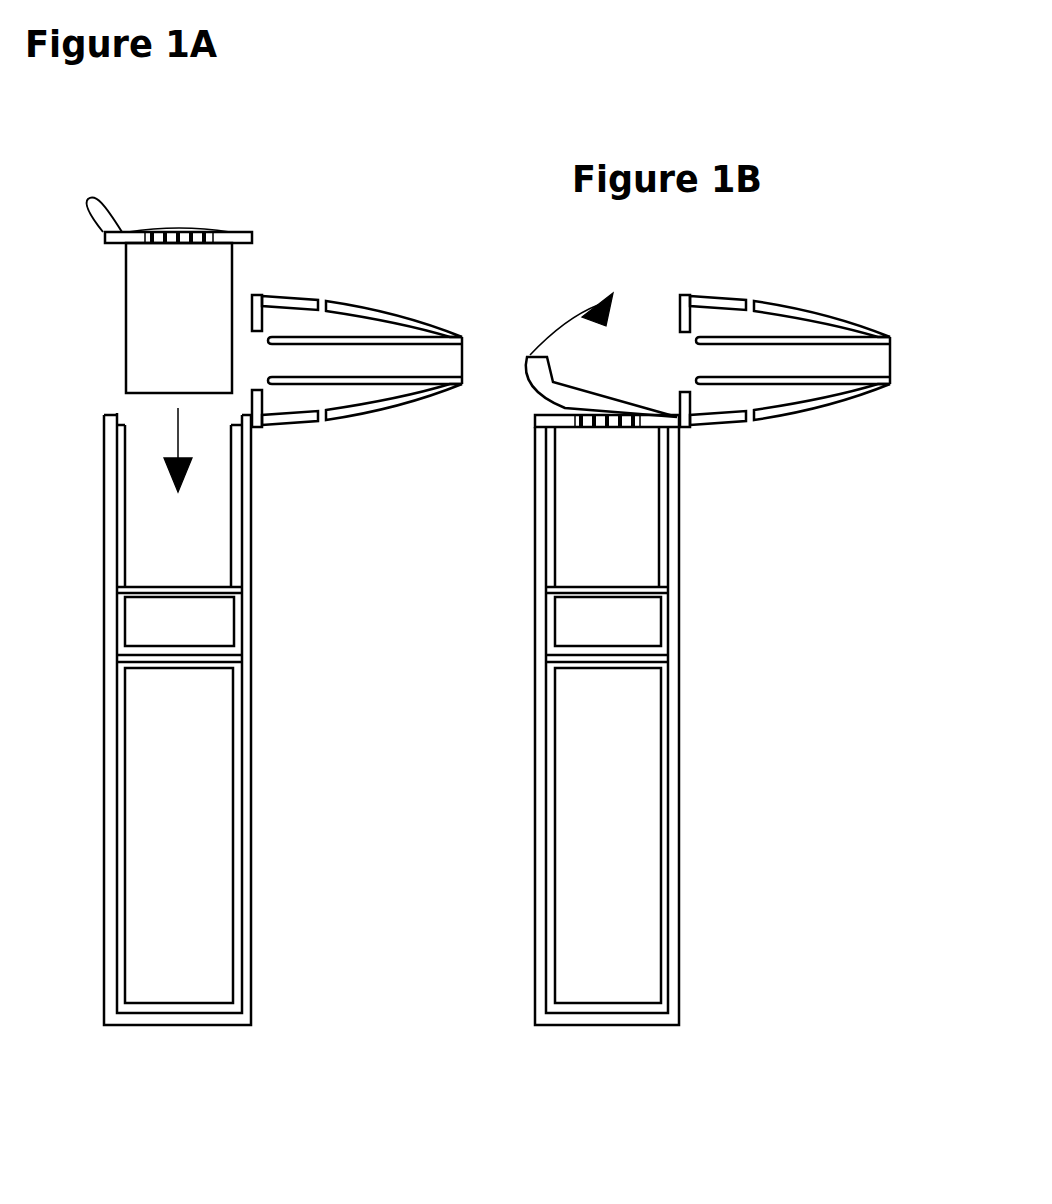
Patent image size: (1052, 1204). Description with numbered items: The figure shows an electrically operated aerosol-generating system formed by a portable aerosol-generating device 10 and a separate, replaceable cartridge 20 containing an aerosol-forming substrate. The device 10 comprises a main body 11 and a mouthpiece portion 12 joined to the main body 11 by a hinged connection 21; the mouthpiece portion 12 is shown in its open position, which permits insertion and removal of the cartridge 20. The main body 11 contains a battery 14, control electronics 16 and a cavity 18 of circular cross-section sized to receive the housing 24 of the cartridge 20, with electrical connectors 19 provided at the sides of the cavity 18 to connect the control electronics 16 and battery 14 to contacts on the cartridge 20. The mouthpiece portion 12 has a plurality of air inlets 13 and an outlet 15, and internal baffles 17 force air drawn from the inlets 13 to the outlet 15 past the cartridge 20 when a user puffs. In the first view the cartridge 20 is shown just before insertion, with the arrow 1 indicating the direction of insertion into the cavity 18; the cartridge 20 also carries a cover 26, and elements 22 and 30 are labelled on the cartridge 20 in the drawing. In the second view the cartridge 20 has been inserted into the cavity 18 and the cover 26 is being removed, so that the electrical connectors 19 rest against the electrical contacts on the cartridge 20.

In FIG. 1A, the arrow 1 is at (175, 440).
In FIG. 1A, the aerosol-generating device 10 is at (98, 765).
In FIG. 1B, the aerosol-generating device 10 is at (526, 771).
In FIG. 1A, the main body 11 is at (253, 558).
In FIG. 1A, the mouthpiece portion 12 is at (388, 300).
In FIG. 1B, the mouthpiece portion 12 is at (818, 300).
In FIG. 1A, the air inlets 13 is at (322, 293).
In FIG. 1B, the air inlets 13 is at (750, 293).
In FIG. 1A, the battery 14 is at (200, 860).
In FIG. 1B, the battery 14 is at (630, 860).
In FIG. 1A, the outlet 15 is at (465, 355).
In FIG. 1A, the control electronics 16 is at (160, 627).
In FIG. 1B, the control electronics 16 is at (585, 627).
In FIG. 1A, the internal baffles 17 is at (363, 380).
In FIG. 1A, the cavity 18 is at (165, 548).
In FIG. 1A, the electrical connectors 19 is at (117, 505).
In FIG. 1B, the electrical connectors 19 is at (668, 500).
In FIG. 1A, the cartridge 20 is at (164, 261).
In FIG. 1B, the cartridge 20 is at (595, 545).
In FIG. 1A, the hinged connection 21 is at (254, 430).
In FIG. 1B, the hinged connection 21 is at (684, 430).
In FIG. 1A, the cap body 22 is at (172, 293).
In FIG. 1A, the housing 24 is at (233, 268).
In FIG. 1A, the cover 26 is at (153, 228).
In FIG. 1B, the cover 26 is at (605, 405).
In FIG. 1A, the gripping ribs 30 is at (228, 226).